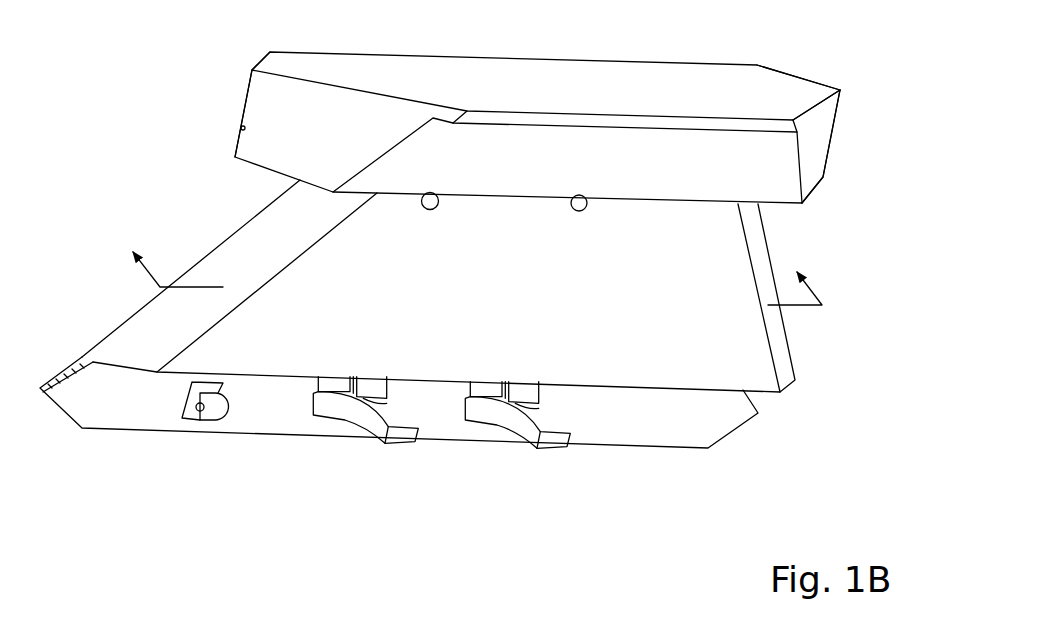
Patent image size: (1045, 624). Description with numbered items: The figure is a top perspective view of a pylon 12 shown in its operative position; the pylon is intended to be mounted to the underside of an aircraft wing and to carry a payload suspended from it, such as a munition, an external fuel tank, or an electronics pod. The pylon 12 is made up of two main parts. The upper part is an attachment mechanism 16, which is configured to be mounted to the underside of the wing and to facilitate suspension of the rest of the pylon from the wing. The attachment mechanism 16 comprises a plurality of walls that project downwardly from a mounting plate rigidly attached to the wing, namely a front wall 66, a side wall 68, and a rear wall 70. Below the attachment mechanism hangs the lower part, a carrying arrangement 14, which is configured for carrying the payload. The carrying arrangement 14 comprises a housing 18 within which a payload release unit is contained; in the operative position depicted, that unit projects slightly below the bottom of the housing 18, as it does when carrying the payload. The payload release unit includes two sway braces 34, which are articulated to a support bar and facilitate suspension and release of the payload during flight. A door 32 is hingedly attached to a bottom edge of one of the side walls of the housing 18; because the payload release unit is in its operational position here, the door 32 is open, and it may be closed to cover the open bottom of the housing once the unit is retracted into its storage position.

The pylon 12 is at (197, 75).
The carrying arrangement 14 is at (812, 333).
The attachment mechanism 16 is at (842, 128).
The housing 18 is at (752, 343).
The door 32 is at (707, 417).
The sway braces 34 is at (383, 410).
The front wall 66 is at (270, 137).
The side wall 68 is at (772, 182).
The rear wall 70 is at (823, 117).